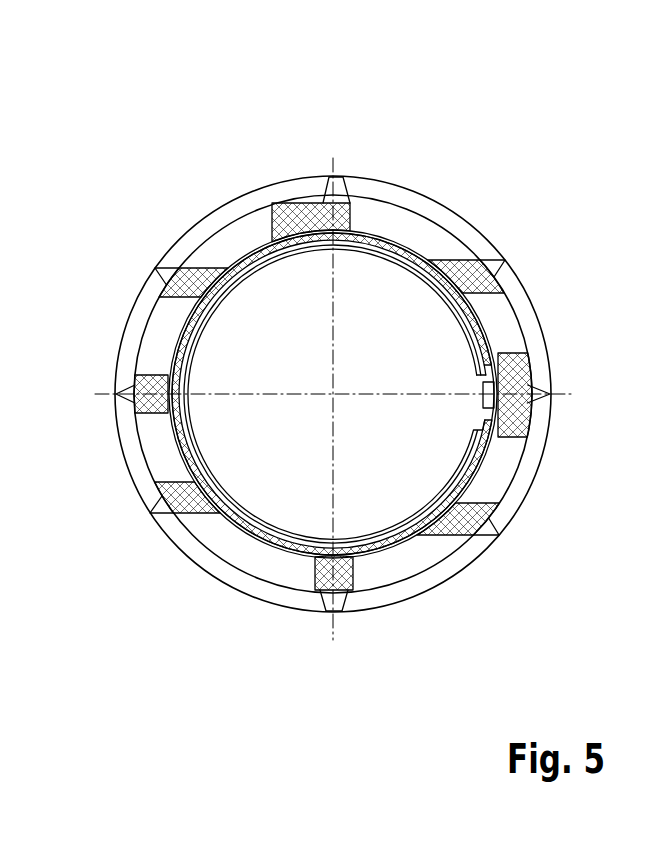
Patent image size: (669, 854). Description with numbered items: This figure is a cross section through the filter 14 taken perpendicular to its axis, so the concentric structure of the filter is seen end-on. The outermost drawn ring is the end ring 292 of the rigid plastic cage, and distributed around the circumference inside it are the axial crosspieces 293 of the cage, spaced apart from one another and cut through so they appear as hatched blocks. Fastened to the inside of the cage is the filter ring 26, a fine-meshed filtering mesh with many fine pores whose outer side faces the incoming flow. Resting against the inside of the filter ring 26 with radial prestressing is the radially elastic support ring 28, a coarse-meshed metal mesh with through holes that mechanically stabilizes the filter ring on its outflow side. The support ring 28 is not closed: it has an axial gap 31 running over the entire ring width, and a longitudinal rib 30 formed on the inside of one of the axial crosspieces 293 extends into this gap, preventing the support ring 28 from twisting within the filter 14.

The filter 14 is at (518, 139).
The filter ring 26 is at (372, 228).
The support ring 28 is at (415, 258).
The longitudinal rib 30 is at (486, 400).
The axial gap 31 is at (487, 374).
The end ring 292 is at (530, 318).
The axial crosspieces 293 is at (291, 219).